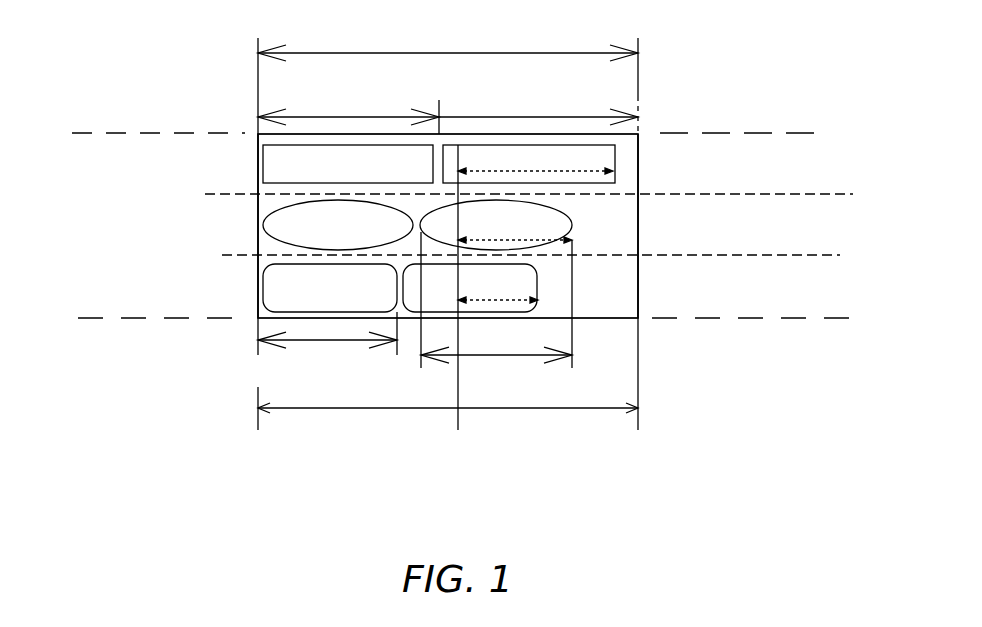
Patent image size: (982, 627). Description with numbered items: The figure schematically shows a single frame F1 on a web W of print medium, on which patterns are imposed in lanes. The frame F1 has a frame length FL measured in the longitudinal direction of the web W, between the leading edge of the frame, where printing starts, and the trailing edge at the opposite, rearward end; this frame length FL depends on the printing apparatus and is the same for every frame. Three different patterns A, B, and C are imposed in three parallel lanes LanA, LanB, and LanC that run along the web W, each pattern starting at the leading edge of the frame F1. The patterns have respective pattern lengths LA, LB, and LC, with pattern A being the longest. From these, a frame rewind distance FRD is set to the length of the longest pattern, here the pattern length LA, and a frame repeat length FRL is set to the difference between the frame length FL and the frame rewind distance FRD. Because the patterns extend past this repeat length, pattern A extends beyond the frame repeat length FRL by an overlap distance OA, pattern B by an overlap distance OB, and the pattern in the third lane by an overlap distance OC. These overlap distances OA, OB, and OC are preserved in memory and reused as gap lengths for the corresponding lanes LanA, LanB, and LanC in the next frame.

The pattern A is at (439, 164).
The pattern B is at (417, 225).
The pattern C is at (400, 288).
The overlap distance OA is at (535, 161).
The overlap distance OB is at (515, 234).
The overlap distance OC is at (498, 292).
The frame F1 is at (572, 312).
The web of print medium W is at (476, 225).
The lane LanA is at (713, 163).
The lane LanB is at (734, 226).
The lane LanC is at (707, 288).
The frame length FL is at (448, 39).
The frame repeat length FRL is at (448, 261).
The frame rewind distance FRD is at (567, 422).
The pattern length LA is at (348, 98).
The pattern length LB is at (496, 374).
The pattern length LC is at (327, 361).